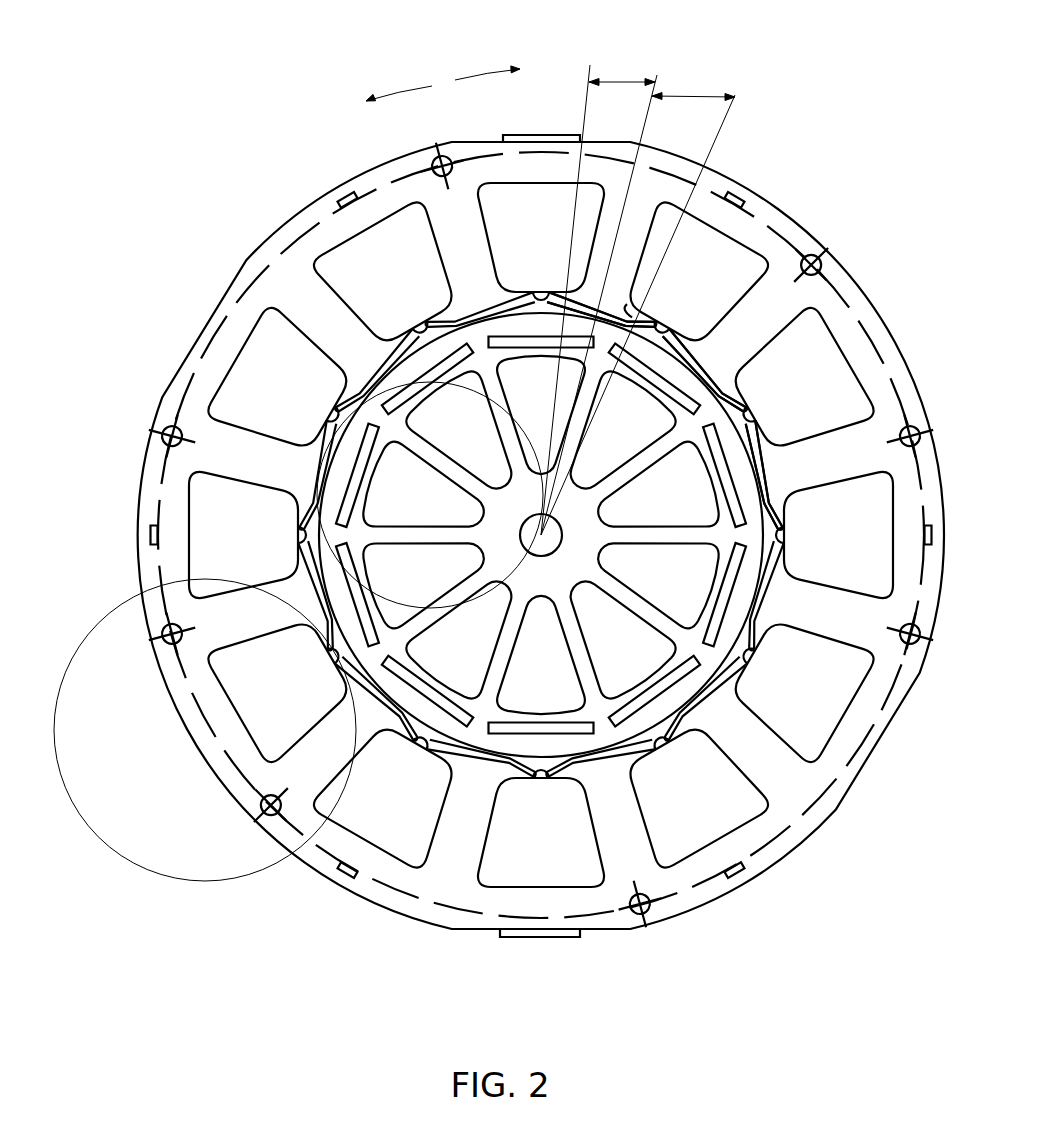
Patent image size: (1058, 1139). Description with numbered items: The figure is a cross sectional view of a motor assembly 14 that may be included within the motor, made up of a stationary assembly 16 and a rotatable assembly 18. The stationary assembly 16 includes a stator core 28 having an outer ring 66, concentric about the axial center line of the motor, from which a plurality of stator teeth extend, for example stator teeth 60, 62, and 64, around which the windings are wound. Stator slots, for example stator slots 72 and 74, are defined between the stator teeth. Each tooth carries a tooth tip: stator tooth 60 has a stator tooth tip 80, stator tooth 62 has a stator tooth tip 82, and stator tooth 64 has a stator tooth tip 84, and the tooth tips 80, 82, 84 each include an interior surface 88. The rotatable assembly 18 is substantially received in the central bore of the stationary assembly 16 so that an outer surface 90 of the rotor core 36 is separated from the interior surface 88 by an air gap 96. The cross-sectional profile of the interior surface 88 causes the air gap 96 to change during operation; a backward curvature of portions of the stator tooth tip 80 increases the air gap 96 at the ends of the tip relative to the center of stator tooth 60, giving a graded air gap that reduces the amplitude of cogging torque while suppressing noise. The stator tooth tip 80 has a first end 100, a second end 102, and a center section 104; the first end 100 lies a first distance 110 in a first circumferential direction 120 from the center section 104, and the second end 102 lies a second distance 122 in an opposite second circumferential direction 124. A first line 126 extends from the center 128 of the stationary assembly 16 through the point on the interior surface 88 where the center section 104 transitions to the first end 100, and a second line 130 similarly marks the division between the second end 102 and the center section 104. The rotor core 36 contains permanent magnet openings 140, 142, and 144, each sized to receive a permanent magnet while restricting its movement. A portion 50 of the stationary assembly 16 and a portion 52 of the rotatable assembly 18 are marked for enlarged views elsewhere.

The motor assembly 14 is at (824, 142).
The stationary assembly 16 is at (851, 266).
The rotatable assembly 18 is at (748, 652).
The stator core 28 is at (790, 204).
The rotor core 36 is at (541, 778).
The portion of stationary assembly 50 is at (108, 590).
The portion of rotatable assembly 52 is at (350, 405).
The stator tooth 60 is at (593, 262).
The stator tooth 62 is at (739, 334).
The stator tooth 64 is at (810, 472).
The outer ring 66 is at (533, 177).
The stator slot 72 is at (706, 274).
The stator slot 74 is at (798, 394).
The stator tooth tip 80 is at (640, 305).
The stator tooth tip 82 is at (735, 353).
The stator tooth tip 84 is at (788, 494).
The interior surface 88 is at (529, 290).
The outer surface 90 is at (662, 745).
The air gap 96 is at (420, 740).
The first end 100 is at (548, 288).
The second end 102 is at (648, 308).
The center section 104 is at (588, 320).
The first distance 110 is at (620, 75).
The first circumferential direction 120 is at (394, 78).
The second distance 122 is at (694, 90).
The second circumferential direction 124 is at (485, 72).
The first line 126 is at (588, 114).
The center of stationary assembly 128 is at (545, 533).
The second line 130 is at (737, 130).
The permanent magnet opening 140 is at (350, 552).
The permanent magnet opening 142 is at (360, 493).
The permanent magnet opening 144 is at (408, 404).